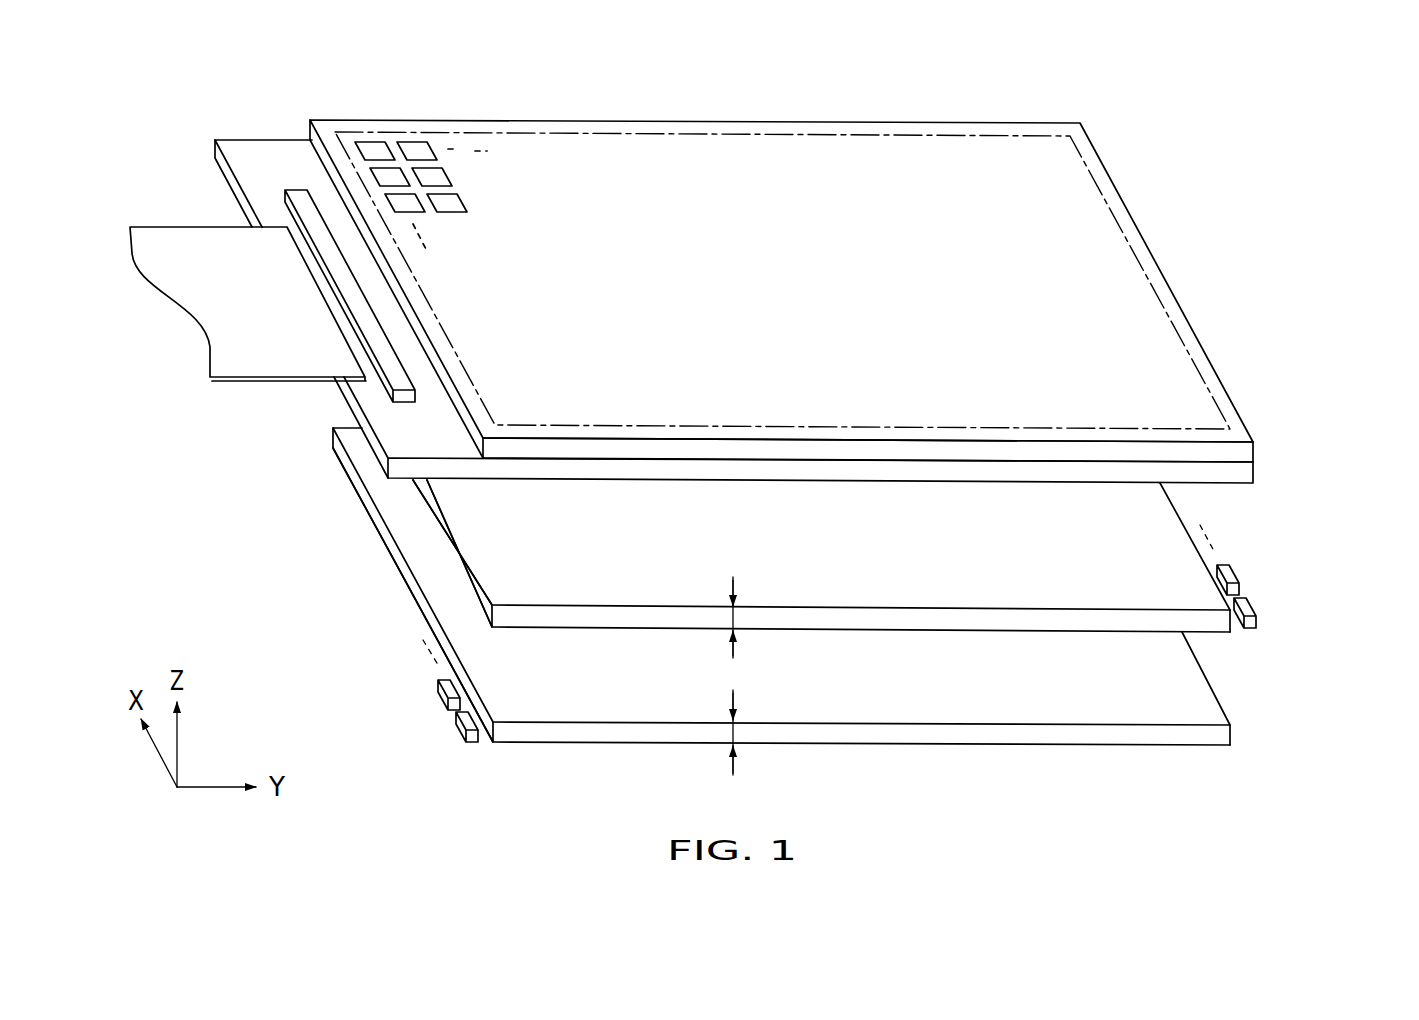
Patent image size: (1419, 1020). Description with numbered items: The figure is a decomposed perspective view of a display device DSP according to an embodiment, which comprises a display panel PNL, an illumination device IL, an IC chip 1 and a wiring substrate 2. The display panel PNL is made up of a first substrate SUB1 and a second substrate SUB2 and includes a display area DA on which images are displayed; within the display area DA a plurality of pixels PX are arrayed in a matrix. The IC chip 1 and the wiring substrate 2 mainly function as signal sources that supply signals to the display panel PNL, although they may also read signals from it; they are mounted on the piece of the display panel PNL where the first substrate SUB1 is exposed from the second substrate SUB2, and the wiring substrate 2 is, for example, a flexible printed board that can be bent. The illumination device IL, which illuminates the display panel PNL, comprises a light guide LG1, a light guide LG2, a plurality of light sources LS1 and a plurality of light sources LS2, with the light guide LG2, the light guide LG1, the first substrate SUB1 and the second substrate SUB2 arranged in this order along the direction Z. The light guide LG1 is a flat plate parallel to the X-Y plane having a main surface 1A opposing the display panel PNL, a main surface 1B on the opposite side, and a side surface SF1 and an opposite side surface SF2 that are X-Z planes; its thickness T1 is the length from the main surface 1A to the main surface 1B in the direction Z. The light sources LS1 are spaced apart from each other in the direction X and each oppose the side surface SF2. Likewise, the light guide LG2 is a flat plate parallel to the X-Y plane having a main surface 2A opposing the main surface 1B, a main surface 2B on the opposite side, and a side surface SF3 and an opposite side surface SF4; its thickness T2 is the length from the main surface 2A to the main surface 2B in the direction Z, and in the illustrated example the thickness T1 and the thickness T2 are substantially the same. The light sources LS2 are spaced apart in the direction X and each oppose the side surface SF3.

The IC chip 1 is at (301, 198).
The wiring substrate 2 is at (200, 240).
The pixel PX is at (416, 149).
The display area DA is at (648, 134).
The display device DSP is at (1228, 250).
The first substrate SUB1 is at (1256, 480).
The second substrate SUB2 is at (1256, 450).
The display panel PNL is at (1343, 440).
The illumination device IL is at (1306, 606).
The light guide LG1 is at (1112, 626).
The light guide LG2 is at (1112, 743).
The light source LS1 is at (1246, 608).
The light source LS2 is at (466, 718).
The main surface 1A is at (881, 587).
The main surface 1B is at (838, 631).
The main surface 2A is at (911, 704).
The main surface 2B is at (896, 746).
The side surface SF1 is at (464, 585).
The side surface SF2 is at (1239, 637).
The side surface SF3 is at (466, 704).
The side surface SF4 is at (1239, 745).
The thickness T1 is at (735, 618).
The thickness T2 is at (735, 733).